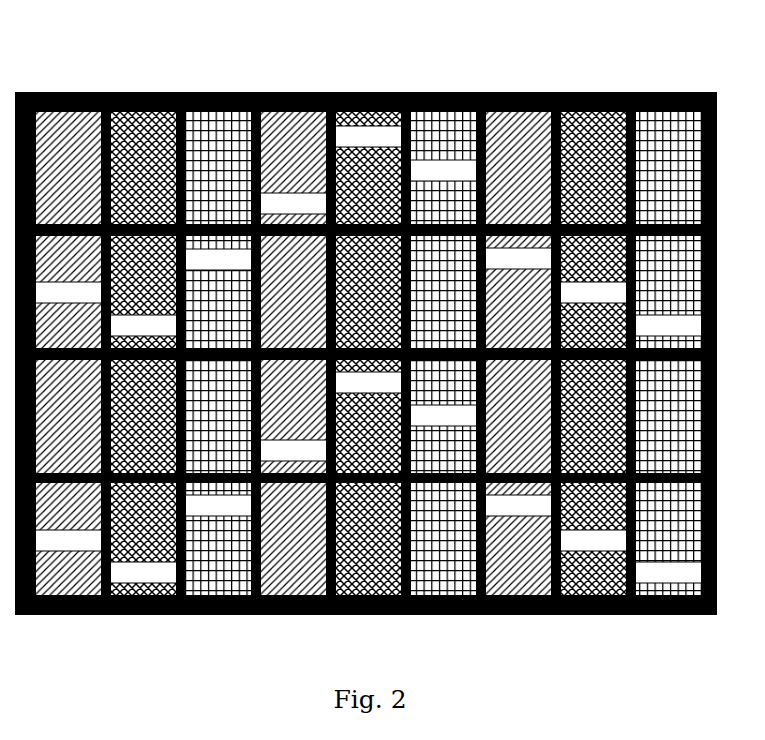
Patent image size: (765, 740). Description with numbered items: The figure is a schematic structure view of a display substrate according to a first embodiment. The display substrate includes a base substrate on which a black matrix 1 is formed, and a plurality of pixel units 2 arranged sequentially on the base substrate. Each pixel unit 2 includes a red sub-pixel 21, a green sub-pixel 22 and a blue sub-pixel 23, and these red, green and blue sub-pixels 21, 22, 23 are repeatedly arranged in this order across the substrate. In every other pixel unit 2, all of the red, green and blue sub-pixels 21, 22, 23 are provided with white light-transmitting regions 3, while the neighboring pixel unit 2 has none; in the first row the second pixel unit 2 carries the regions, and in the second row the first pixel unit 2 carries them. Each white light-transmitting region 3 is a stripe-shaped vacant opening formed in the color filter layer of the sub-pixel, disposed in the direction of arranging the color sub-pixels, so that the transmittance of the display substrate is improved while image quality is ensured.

The black matrix 1 is at (550, 92).
The pixel unit 2 is at (93, 40).
The red sub-pixel 21 is at (78, 93).
The green sub-pixel 22 is at (157, 93).
The blue sub-pixel 23 is at (232, 93).
The white light-transmitting region 3 is at (280, 200).